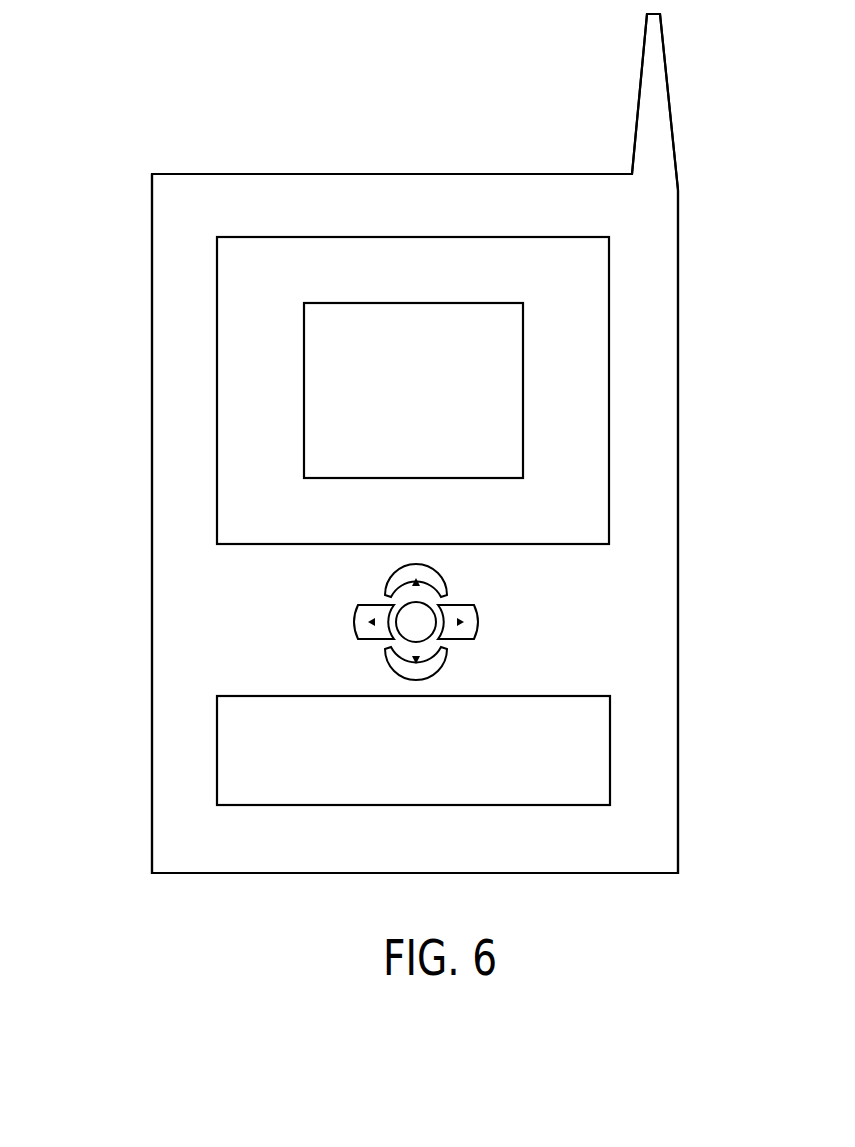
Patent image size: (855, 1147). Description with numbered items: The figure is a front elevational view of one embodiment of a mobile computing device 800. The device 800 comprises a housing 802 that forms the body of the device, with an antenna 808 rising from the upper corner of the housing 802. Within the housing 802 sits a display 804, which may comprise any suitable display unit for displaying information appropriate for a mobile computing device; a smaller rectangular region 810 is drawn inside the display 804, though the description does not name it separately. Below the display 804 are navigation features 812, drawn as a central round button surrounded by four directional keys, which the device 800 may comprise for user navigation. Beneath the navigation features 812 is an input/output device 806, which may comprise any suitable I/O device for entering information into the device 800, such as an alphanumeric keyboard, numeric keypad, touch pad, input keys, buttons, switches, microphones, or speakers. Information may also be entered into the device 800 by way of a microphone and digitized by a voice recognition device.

The device 800 is at (150, 112).
The housing 802 is at (150, 612).
The display 804 is at (609, 293).
The input/output (I/O) device 806 is at (610, 750).
The antenna 808 is at (638, 95).
The display window 810 is at (414, 303).
The navigation features 812 is at (512, 623).